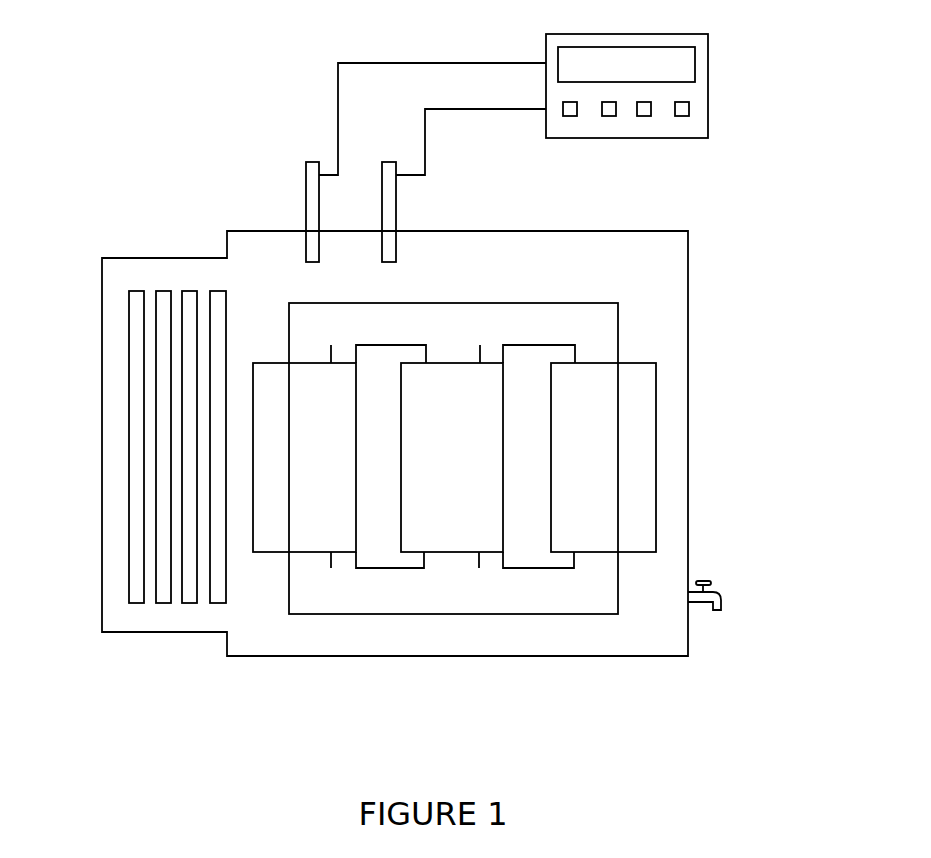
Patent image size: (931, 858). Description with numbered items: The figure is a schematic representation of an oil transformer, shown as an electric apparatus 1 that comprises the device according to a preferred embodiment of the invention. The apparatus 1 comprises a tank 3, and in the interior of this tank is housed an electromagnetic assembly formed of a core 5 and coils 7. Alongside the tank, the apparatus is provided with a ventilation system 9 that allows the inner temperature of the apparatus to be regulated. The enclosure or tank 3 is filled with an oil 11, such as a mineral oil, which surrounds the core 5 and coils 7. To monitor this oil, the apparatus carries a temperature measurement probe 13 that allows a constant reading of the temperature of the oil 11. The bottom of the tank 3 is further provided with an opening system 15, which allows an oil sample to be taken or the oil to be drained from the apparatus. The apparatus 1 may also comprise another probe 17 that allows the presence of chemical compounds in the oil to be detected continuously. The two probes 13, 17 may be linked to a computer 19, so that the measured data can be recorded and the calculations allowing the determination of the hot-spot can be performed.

The electric apparatus 1 is at (107, 128).
The tank 3 is at (690, 490).
The core 5 is at (620, 331).
The coils 7 is at (602, 552).
The ventilation system 9 is at (127, 574).
The oil 11 is at (260, 300).
The temperature measurement probe 13 is at (313, 162).
The opening system 15 is at (733, 590).
The probe 17 is at (397, 195).
The computer 19 is at (668, 138).